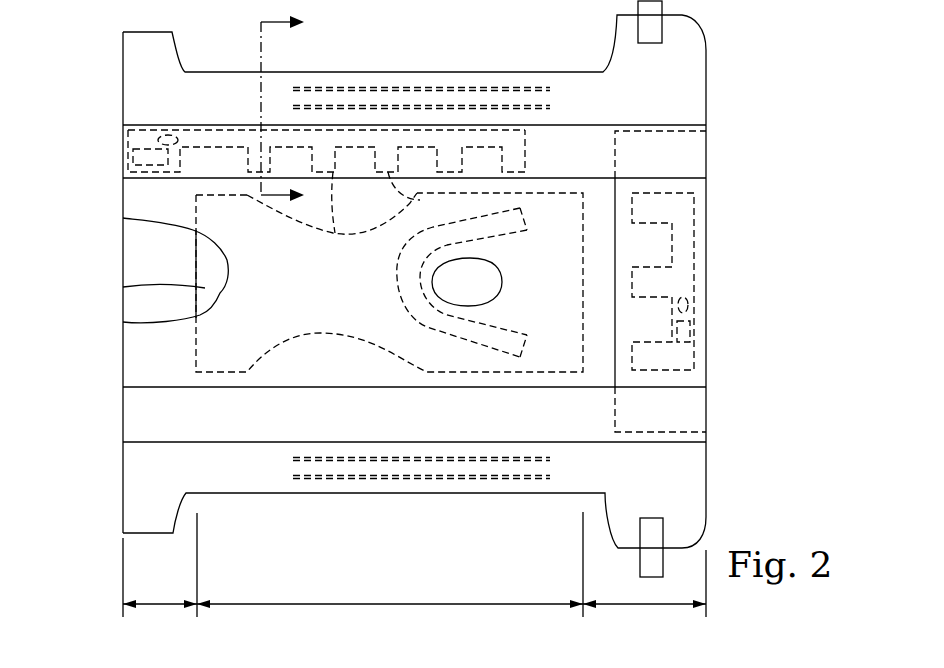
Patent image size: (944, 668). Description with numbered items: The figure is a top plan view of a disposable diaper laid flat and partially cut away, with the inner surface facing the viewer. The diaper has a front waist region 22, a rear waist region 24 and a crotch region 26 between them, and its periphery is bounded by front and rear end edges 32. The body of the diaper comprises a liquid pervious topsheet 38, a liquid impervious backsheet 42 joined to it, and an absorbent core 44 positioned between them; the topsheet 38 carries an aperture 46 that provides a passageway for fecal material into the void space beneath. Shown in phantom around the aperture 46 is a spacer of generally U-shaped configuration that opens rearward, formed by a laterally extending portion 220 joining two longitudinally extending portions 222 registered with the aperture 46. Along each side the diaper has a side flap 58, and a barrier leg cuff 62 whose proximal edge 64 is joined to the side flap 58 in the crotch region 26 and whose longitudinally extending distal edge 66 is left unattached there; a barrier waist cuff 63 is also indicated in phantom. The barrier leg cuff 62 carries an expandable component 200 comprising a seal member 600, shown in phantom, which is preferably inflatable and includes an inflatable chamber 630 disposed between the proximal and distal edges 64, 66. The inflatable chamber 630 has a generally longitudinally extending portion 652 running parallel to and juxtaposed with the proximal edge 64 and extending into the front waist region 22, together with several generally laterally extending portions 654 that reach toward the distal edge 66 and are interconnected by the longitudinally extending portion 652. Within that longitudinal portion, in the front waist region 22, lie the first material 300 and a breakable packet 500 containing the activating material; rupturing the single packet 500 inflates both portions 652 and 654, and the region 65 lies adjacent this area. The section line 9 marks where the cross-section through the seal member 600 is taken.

The section line 9- 9 is at (293, 110).
The front waist region 22 is at (162, 604).
The rear waist region 24 is at (645, 605).
The crotch region 26 is at (392, 605).
The front and rear end edges 32 is at (123, 265).
The topsheet 38 is at (137, 363).
The backsheet 42 is at (135, 308).
The absorbent core 44 is at (123, 287).
The aperture 46 is at (490, 295).
The side flap 58 is at (561, 98).
The barrier leg cuff 62 is at (605, 170).
The barrier waist cuff 63 is at (645, 318).
The proximal edge 64 is at (673, 125).
The waist panel 65 is at (175, 407).
The distal edge 66 is at (348, 179).
The expandable component 200 is at (462, 114).
The laterally extending portion 220 is at (410, 278).
The longitudinally extending portions 222 is at (490, 228).
The first material 300 is at (158, 140).
The breakable packet 500 is at (147, 160).
The seal member 600 is at (527, 137).
The inflatable chamber 630 is at (222, 128).
The longitudinally extending portion 652 is at (283, 138).
The laterally extending portions 654 is at (240, 168).